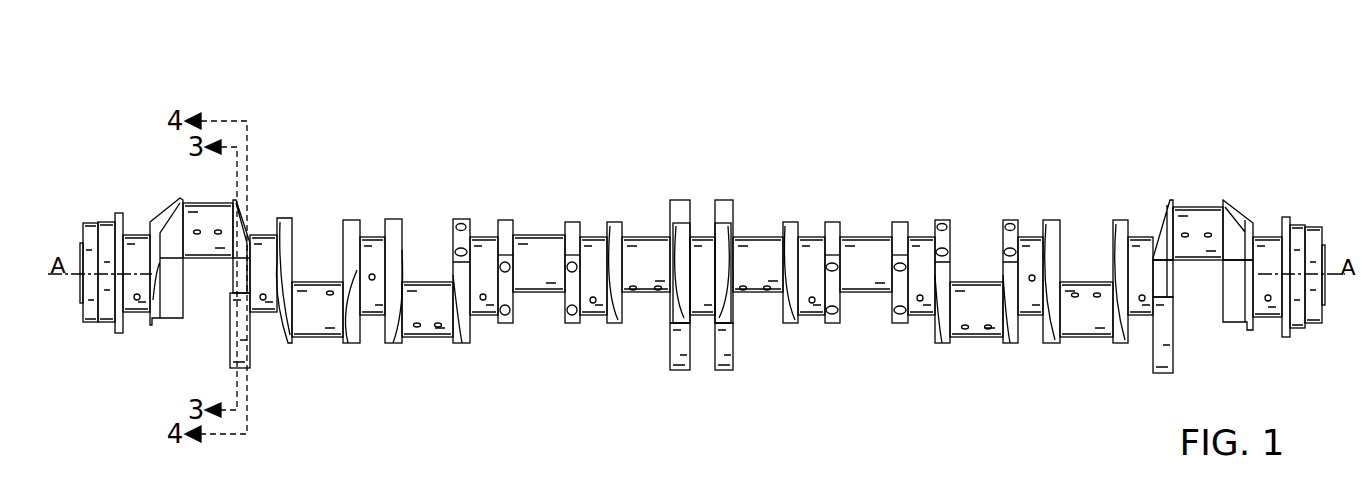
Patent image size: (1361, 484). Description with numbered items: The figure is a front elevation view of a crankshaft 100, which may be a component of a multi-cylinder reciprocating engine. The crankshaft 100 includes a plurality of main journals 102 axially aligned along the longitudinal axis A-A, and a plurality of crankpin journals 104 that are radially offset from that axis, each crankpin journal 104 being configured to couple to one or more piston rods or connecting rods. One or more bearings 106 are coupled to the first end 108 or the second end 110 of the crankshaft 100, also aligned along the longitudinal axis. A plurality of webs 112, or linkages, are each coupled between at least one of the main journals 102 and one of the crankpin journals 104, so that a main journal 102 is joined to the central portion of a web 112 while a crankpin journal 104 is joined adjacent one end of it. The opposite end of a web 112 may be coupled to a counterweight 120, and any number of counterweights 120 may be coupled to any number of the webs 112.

The crankshaft 100 is at (348, 44).
The main journal 102 is at (137, 233).
The crankpin journal 104 is at (208, 203).
The bearing 106 is at (92, 222).
The first end 108 is at (1325, 297).
The second end 110 is at (75, 303).
The web 112 is at (285, 217).
The counterweight 120 is at (233, 362).